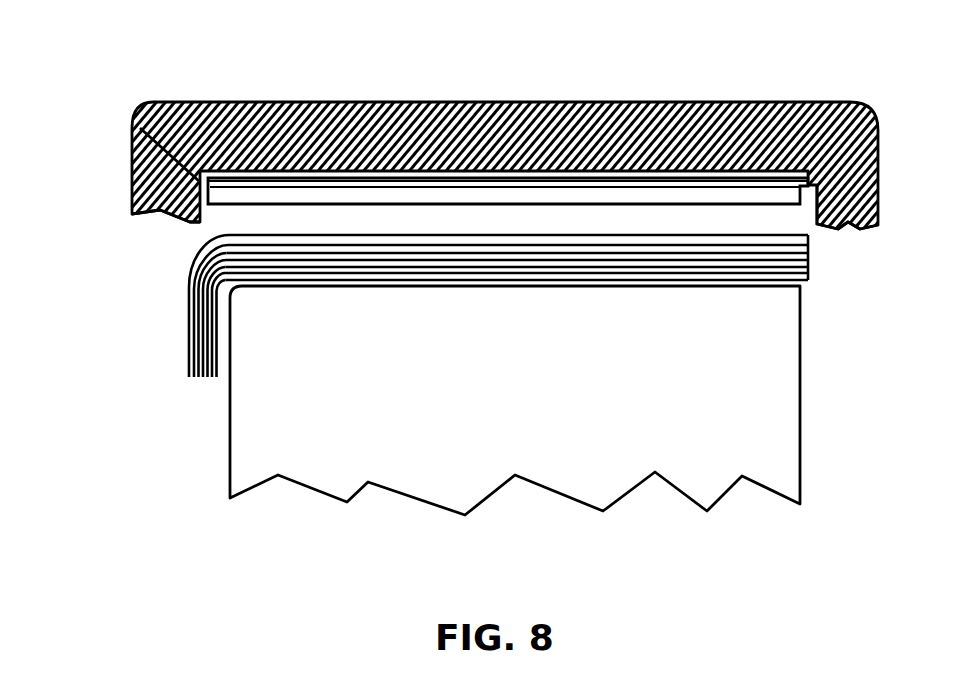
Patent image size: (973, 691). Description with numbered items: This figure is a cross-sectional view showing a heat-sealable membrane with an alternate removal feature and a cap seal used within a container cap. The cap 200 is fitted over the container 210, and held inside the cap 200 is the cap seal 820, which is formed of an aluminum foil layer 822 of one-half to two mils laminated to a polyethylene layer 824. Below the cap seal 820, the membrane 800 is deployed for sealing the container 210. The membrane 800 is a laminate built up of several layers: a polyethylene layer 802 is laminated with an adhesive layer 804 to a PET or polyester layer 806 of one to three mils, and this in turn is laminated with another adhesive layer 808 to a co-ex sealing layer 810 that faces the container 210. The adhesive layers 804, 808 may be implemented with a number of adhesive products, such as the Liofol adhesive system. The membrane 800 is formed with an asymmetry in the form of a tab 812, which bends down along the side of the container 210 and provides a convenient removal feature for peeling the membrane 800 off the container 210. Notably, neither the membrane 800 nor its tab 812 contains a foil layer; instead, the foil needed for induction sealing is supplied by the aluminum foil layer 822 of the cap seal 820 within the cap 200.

The cap 200 is at (475, 100).
The cap seal 820 is at (132, 133).
The aluminum foil layer 822 is at (820, 135).
The polyethylene layer 824 is at (880, 163).
The membrane 800 is at (505, 342).
The polyethylene layer 802 is at (815, 243).
The adhesive layer 804 is at (812, 251).
The PET or polyester layer 806 is at (812, 258).
The adhesive layer 808 is at (812, 264).
The co-ex sealing layer 810 is at (812, 270).
The tab 812 is at (187, 348).
The container 210 is at (230, 455).